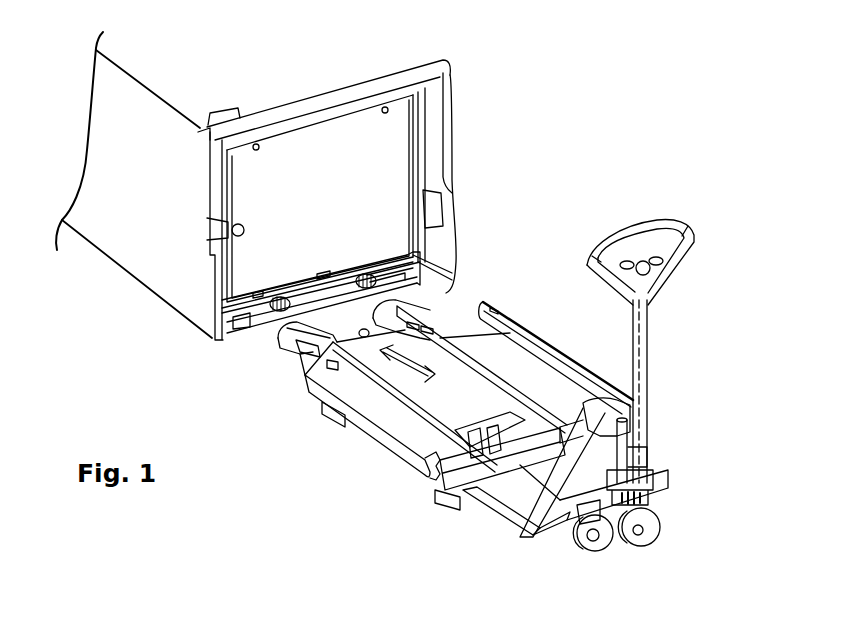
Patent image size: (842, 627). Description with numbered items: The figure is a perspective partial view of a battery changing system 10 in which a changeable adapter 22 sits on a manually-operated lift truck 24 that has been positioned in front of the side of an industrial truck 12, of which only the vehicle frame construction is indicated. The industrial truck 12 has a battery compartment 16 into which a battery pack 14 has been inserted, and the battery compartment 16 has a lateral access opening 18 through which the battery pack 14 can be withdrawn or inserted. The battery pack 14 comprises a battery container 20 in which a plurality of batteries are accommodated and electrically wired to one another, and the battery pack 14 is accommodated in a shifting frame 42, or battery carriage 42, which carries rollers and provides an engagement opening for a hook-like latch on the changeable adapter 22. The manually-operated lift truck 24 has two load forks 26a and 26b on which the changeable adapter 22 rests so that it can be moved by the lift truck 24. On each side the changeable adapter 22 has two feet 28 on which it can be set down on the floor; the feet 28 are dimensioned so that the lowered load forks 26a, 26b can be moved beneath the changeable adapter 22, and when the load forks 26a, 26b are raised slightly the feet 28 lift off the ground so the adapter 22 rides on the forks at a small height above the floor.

The battery changing system 10 is at (570, 167).
The industrial truck 12 is at (437, 97).
The battery pack 14 is at (294, 172).
The battery compartment 16 is at (445, 62).
The lateral access opening 18 is at (427, 160).
The battery container 20 is at (350, 142).
The changeable adapter 22 is at (375, 450).
The manually-operated lift truck 24 is at (633, 420).
The load fork 26a is at (284, 340).
The load fork 26b is at (430, 310).
The feet 28 is at (337, 427).
The shifting frame 42 is at (298, 292).